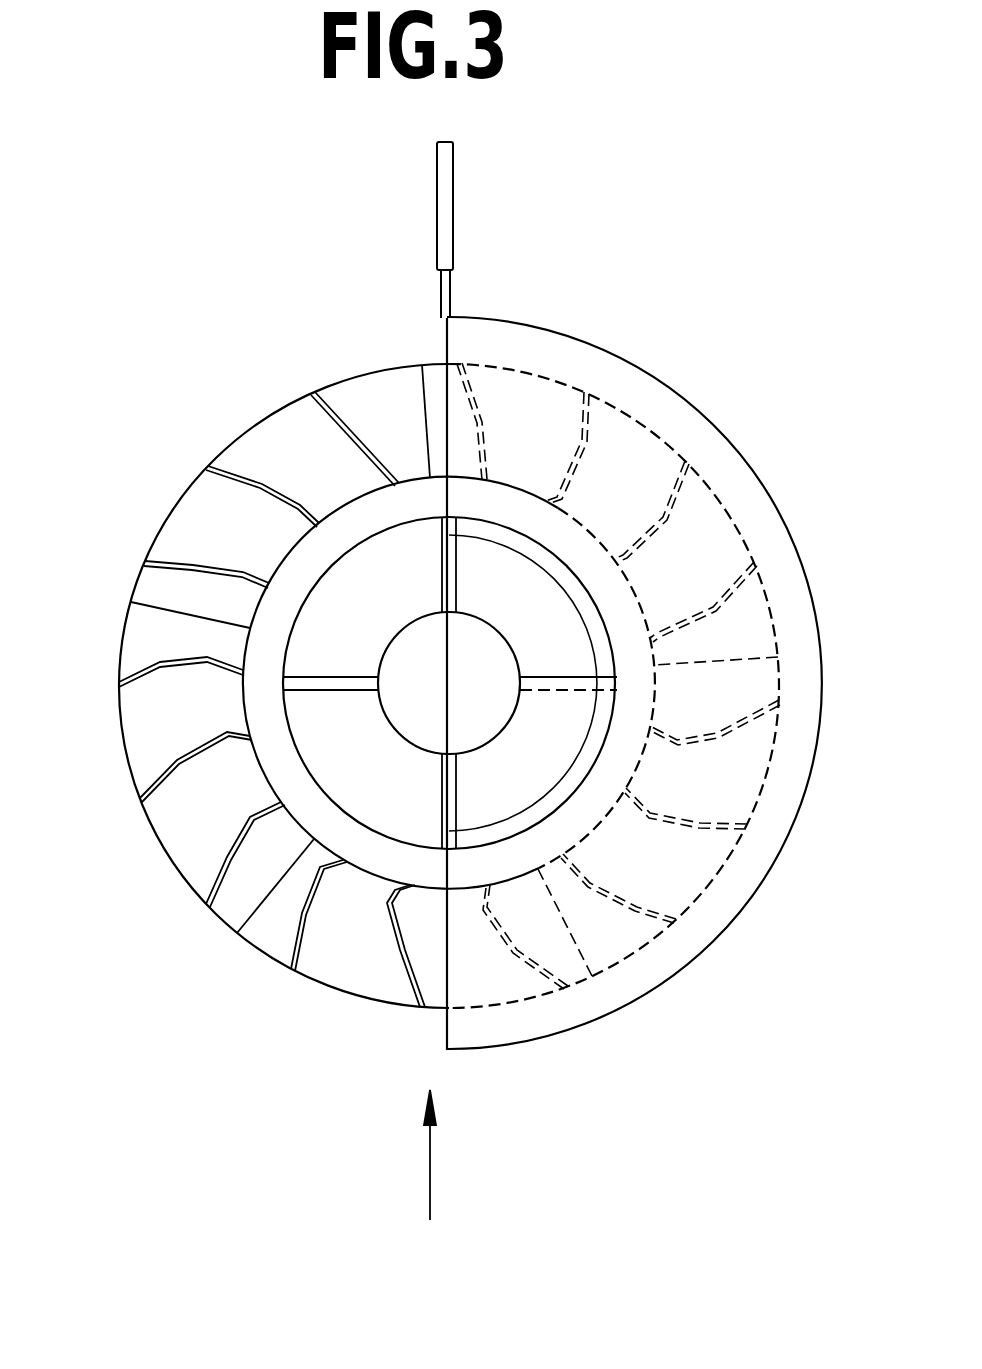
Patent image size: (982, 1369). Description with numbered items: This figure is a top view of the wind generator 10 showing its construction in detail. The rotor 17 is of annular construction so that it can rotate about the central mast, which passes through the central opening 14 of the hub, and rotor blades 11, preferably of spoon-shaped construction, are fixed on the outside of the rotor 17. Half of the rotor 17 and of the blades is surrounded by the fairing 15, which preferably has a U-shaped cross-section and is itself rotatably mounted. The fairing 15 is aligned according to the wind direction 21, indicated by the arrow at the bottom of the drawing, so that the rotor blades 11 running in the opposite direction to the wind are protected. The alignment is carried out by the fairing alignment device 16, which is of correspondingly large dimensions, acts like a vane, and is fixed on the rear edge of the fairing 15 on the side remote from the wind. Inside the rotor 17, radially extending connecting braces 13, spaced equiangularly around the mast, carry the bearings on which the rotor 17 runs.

The wind generator 10 is at (664, 641).
The rotor blades 11 is at (313, 425).
The connecting braces 13 is at (348, 680).
The central hole 14 is at (477, 708).
The fairing 15 is at (790, 545).
The fairing alignment device 16 is at (453, 200).
The rotor 17 is at (165, 520).
The wind direction 21 is at (430, 1170).